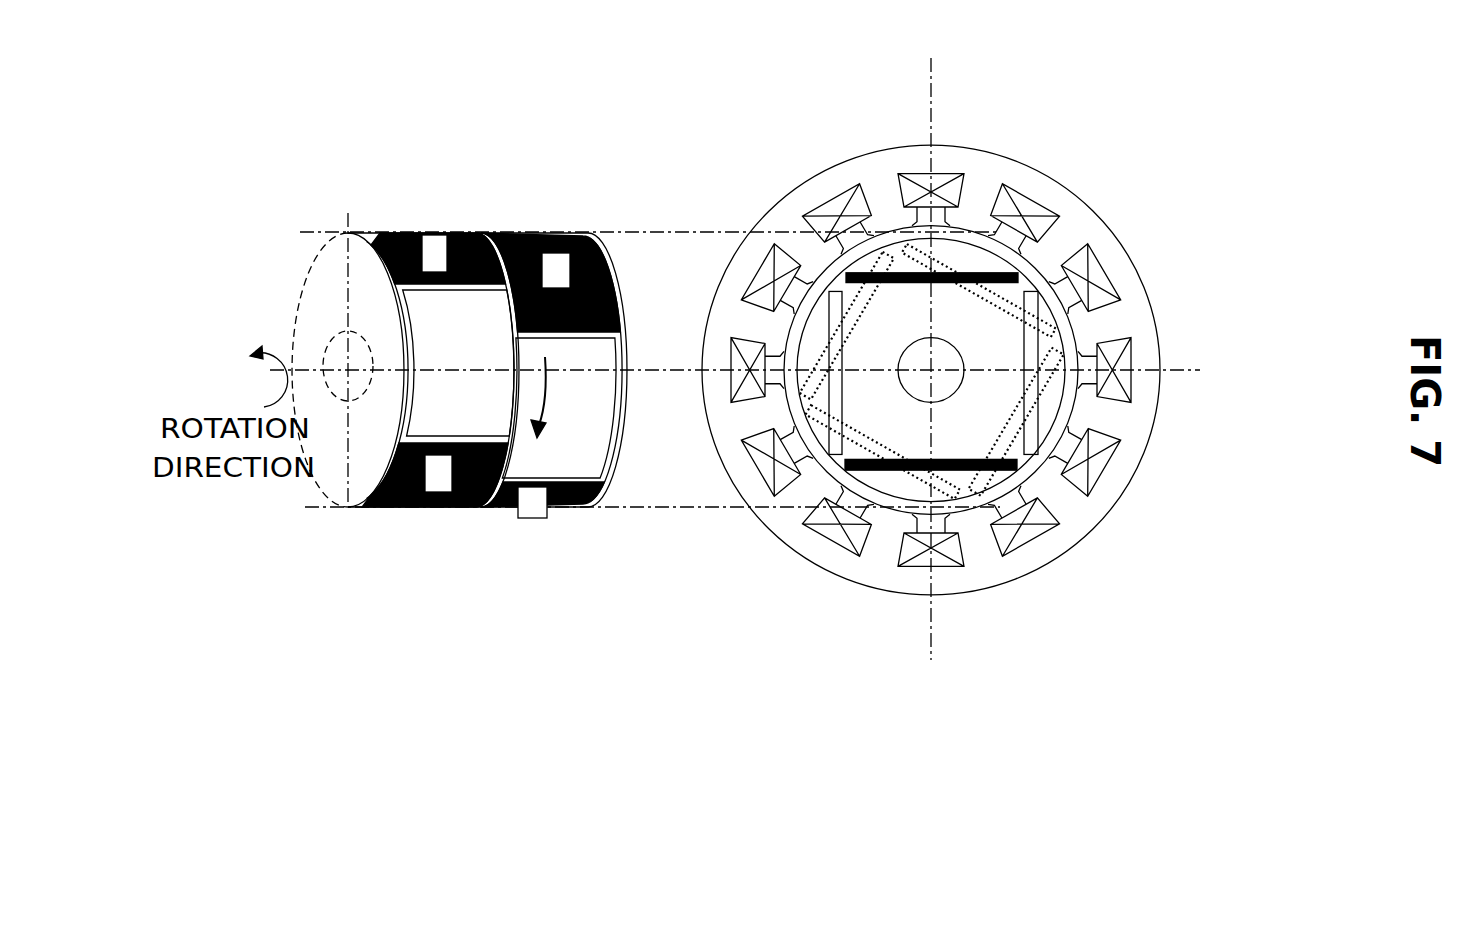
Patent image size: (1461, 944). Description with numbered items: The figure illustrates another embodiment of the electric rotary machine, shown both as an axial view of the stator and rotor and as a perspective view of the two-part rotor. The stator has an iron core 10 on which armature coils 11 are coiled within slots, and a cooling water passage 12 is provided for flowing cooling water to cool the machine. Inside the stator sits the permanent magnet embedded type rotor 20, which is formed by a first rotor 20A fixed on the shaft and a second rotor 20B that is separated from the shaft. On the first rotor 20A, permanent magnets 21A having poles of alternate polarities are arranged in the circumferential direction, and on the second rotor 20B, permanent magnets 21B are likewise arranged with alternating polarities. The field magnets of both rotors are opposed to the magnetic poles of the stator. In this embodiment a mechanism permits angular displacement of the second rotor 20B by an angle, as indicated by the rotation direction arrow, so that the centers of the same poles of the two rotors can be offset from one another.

The iron core 10 is at (975, 147).
The armature coils 11 is at (1005, 193).
The cooling water passage 12 is at (901, 354).
The permanent magnet embedded type rotor 20 is at (1030, 270).
The first rotor 20A is at (382, 232).
The second rotor 20B is at (612, 257).
The permanent magnets 21A is at (1030, 438).
The permanent magnets 21B is at (1043, 390).